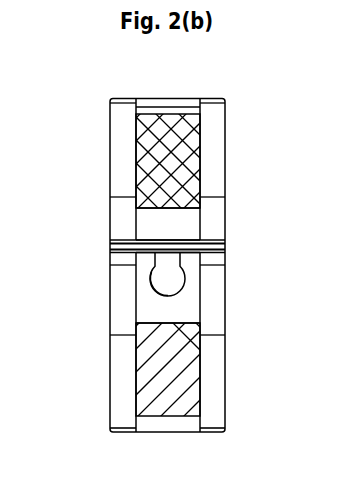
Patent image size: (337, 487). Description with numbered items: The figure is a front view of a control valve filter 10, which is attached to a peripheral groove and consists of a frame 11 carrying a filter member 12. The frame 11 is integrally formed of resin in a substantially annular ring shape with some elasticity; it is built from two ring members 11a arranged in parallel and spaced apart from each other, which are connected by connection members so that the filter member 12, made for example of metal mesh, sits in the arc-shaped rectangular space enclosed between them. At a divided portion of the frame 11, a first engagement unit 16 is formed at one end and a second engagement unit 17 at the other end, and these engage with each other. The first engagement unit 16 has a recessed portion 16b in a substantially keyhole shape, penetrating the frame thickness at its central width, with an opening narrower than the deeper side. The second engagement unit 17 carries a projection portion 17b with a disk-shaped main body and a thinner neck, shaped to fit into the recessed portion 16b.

The control valve filter 10 is at (225, 137).
The frame 11 is at (225, 174).
The ring member 11a is at (225, 358).
The filter member 12 is at (165, 155).
The first engagement unit 16 is at (185, 308).
The recessed portion 16b is at (160, 287).
The second engagement unit 17 is at (152, 223).
The projection portion 17b is at (167, 277).